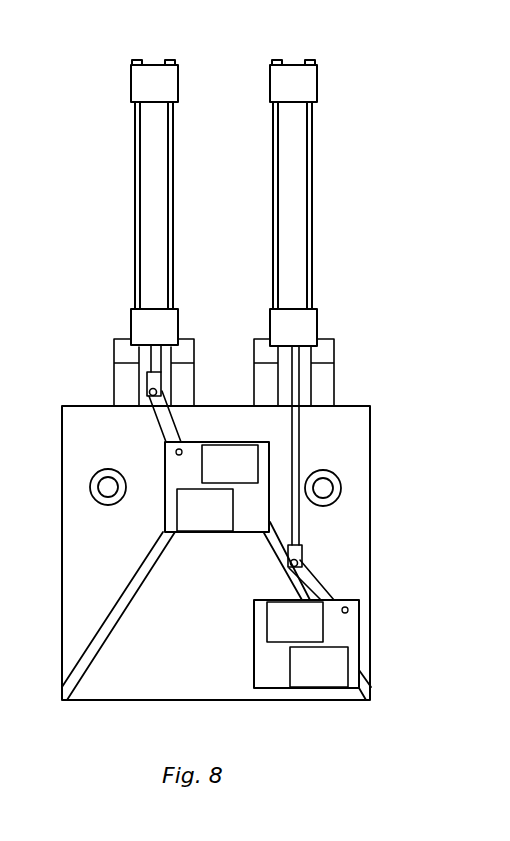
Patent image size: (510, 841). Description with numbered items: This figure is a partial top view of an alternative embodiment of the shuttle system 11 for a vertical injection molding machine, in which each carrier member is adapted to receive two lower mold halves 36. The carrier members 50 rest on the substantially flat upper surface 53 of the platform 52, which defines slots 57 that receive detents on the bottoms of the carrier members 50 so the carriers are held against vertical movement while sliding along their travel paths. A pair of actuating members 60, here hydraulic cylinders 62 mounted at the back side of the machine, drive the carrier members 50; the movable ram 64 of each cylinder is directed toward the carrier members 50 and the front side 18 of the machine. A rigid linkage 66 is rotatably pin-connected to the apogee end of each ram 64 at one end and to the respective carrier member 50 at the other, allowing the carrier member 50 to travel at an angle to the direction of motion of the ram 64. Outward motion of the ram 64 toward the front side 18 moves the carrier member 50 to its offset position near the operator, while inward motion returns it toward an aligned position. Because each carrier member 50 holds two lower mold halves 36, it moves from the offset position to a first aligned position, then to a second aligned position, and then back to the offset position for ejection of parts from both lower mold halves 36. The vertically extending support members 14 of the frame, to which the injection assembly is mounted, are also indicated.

The hydraulic cylinders 62 is at (268, 68).
The actuating member 60 is at (353, 172).
The shuttle system 11 is at (397, 405).
The support members 14 is at (342, 492).
The carrier members 50 is at (270, 478).
The lower mold halves 36 is at (202, 470).
The ram 64 is at (299, 515).
The rigid linkage 66 is at (327, 585).
The slots 57 is at (283, 545).
The upper surface 53 is at (82, 598).
The platform 52 is at (62, 632).
The front side 18 is at (138, 700).